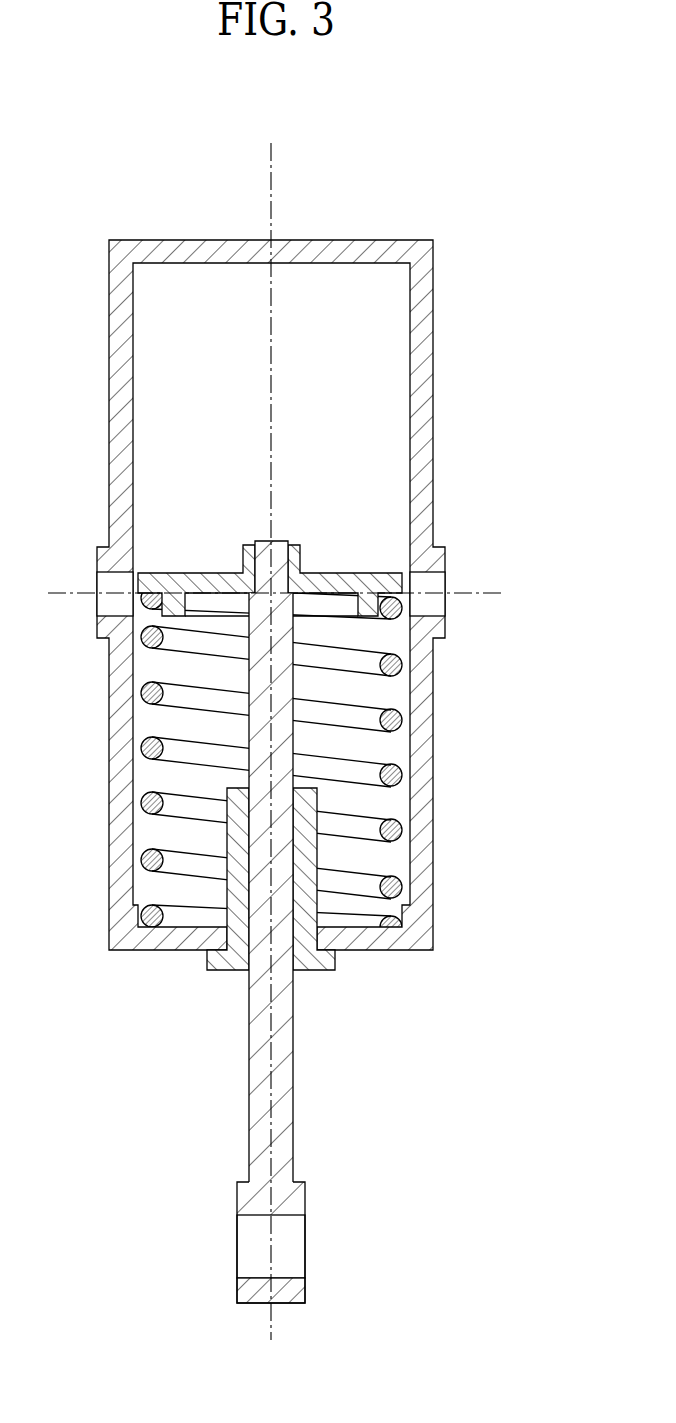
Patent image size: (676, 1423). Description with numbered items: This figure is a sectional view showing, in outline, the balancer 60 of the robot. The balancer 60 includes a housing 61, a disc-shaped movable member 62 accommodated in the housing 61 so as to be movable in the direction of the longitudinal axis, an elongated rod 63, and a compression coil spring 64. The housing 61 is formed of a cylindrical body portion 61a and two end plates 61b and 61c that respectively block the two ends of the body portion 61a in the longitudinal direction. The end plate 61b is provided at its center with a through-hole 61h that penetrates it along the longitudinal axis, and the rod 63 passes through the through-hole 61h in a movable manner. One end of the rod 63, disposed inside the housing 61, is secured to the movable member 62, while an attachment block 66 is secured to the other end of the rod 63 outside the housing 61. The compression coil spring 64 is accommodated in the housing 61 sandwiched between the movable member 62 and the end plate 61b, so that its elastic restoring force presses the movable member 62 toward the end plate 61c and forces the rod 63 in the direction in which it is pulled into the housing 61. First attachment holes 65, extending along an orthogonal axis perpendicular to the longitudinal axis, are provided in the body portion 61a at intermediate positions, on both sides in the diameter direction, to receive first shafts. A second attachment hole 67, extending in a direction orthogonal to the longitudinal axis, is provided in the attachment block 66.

The balancer 60 is at (296, 724).
The housing 61 is at (326, 598).
The cylindrical body portion 61a is at (434, 405).
The end plate 61b is at (434, 929).
The end plate 61c is at (378, 240).
The through-hole 61h is at (307, 938).
The movable member 62 is at (184, 572).
The rod 63 is at (297, 1096).
The compression coil spring 64 is at (147, 740).
The first attachment holes 65 is at (437, 603).
The attachment block 66 is at (279, 1232).
The second attachment hole 67 is at (246, 1263).